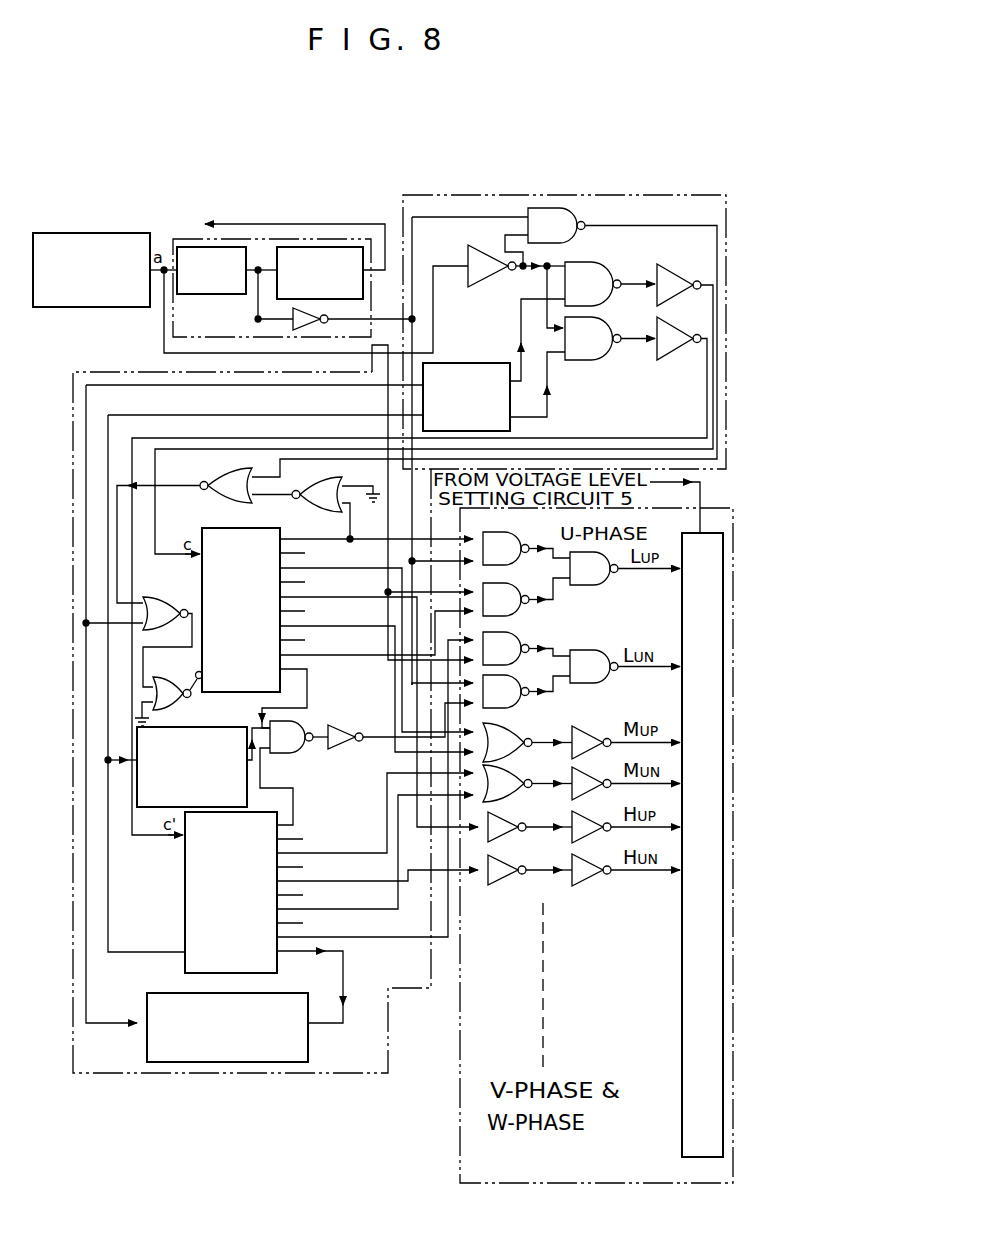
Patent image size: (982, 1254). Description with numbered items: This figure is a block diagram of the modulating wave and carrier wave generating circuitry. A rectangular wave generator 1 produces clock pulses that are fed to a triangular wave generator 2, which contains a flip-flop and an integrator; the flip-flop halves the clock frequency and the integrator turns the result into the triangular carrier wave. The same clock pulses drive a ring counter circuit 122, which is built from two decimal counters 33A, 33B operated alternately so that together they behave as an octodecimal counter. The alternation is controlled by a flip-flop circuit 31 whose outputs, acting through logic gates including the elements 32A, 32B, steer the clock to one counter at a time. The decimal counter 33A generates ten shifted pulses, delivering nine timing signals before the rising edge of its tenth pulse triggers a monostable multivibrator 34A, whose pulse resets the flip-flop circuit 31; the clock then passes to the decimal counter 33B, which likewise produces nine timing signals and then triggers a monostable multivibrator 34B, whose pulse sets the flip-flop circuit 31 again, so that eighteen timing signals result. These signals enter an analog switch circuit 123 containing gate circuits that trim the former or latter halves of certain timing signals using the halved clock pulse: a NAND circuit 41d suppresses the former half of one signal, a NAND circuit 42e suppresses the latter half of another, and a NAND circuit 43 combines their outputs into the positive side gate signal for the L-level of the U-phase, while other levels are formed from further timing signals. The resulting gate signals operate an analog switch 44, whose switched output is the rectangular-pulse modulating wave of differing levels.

The rectangular wave generator 1 is at (33, 264).
The triangular wave generator 2 is at (369, 334).
The flip-flop circuit 31 is at (453, 363).
The inverter 32A is at (657, 267).
The inverter 32B is at (679, 351).
The decimal counter 33A is at (258, 528).
The decimal counter 33B is at (285, 812).
The monostable multivibrator 34A is at (147, 808).
The monostable multivibrator 34B is at (309, 1035).
The NAND circuit 41d is at (507, 532).
The NAND circuit 42e is at (507, 584).
The NAND circuit 43 is at (594, 556).
The analog switch 44 is at (682, 1075).
The ring counter circuit 122 is at (76, 1078).
The analog switch circuit 123 is at (457, 1018).